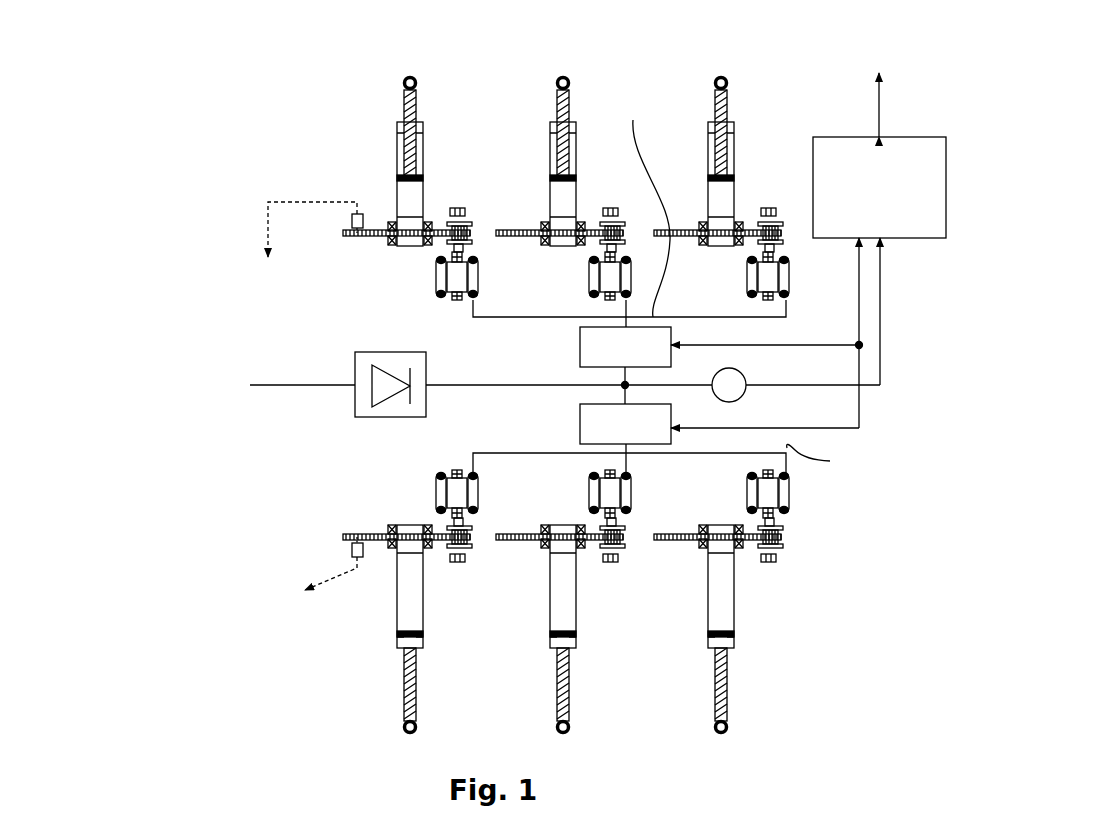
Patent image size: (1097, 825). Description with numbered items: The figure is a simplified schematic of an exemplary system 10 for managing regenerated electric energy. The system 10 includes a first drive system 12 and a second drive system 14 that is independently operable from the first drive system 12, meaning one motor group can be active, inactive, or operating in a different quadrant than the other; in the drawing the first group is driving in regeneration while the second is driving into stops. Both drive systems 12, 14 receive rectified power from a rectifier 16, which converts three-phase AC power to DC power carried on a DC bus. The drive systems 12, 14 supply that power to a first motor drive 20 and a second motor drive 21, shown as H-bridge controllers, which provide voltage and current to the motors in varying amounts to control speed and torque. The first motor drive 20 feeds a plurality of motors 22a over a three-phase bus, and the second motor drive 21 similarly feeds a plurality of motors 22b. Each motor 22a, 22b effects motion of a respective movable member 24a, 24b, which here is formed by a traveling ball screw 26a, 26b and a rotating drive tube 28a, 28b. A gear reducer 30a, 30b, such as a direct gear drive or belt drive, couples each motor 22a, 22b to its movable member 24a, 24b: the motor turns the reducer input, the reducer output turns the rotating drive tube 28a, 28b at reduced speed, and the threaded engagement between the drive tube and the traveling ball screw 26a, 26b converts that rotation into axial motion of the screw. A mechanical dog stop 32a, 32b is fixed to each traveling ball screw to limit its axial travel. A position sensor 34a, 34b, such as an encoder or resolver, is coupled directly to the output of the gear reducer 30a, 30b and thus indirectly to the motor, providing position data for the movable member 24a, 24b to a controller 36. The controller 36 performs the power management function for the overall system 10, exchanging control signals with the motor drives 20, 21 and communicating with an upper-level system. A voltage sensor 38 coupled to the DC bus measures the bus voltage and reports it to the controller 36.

The system 10 is at (218, 112).
The first drive system 12 is at (415, 203).
The second drive system 14 is at (511, 588).
The rectifier 16 is at (378, 352).
The first motor drive 20 is at (580, 355).
The second motor drive 21 is at (580, 408).
The motor 22a is at (440, 288).
The motor 22b is at (436, 494).
The movable member 24a is at (298, 157).
The movable member 24b is at (345, 670).
The traveling ball screw 26a is at (396, 177).
The traveling ball screw 26b is at (397, 634).
The rotating drive tube 28a is at (396, 192).
The rotating drive tube 28b is at (397, 572).
The gear reducer 30a is at (446, 241).
The gear reducer 30b is at (436, 548).
The mechanical dog stop 32a is at (401, 135).
The mechanical dog stop 32b is at (397, 648).
The position sensor 34a is at (348, 221).
The position sensor 34b is at (350, 544).
The controller 36 is at (835, 137).
The voltage sensor 38 is at (742, 374).